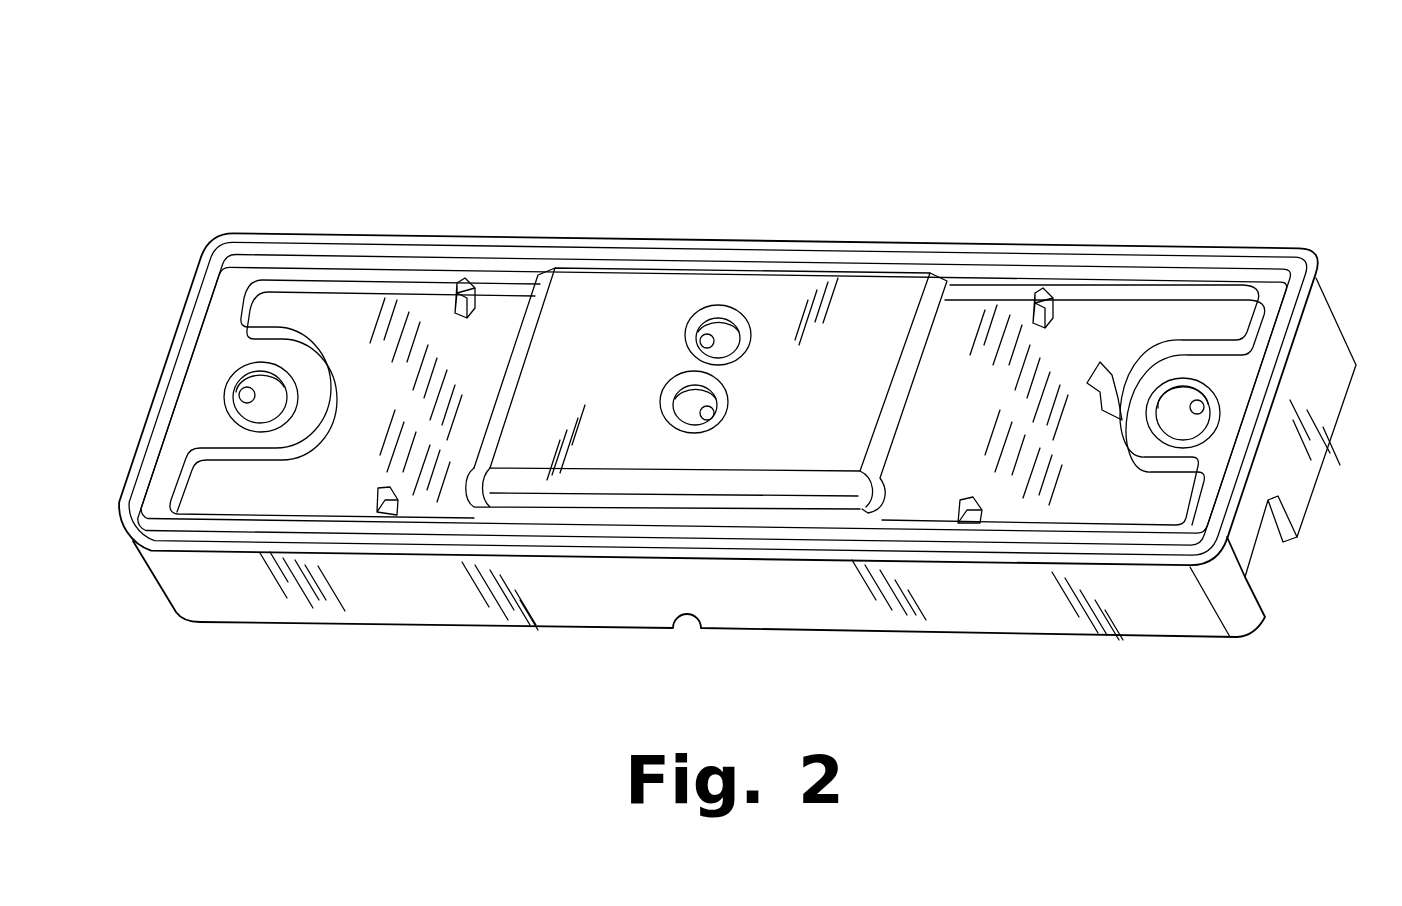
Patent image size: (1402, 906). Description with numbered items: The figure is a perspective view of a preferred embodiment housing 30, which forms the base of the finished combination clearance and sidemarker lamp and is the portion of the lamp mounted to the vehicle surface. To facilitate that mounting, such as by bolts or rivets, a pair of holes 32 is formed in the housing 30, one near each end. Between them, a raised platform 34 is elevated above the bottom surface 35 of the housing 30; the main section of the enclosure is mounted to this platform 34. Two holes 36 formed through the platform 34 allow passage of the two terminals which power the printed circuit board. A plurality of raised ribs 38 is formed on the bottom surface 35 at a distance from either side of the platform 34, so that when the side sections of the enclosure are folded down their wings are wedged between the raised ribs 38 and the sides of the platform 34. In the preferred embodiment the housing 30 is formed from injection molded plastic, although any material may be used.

The housing 30 is at (1258, 120).
The holes 32 is at (244, 393).
The raised platform 34 is at (655, 290).
The bottom surface 35 is at (326, 317).
The holes 36 is at (690, 333).
The raised ribs 38 is at (463, 272).